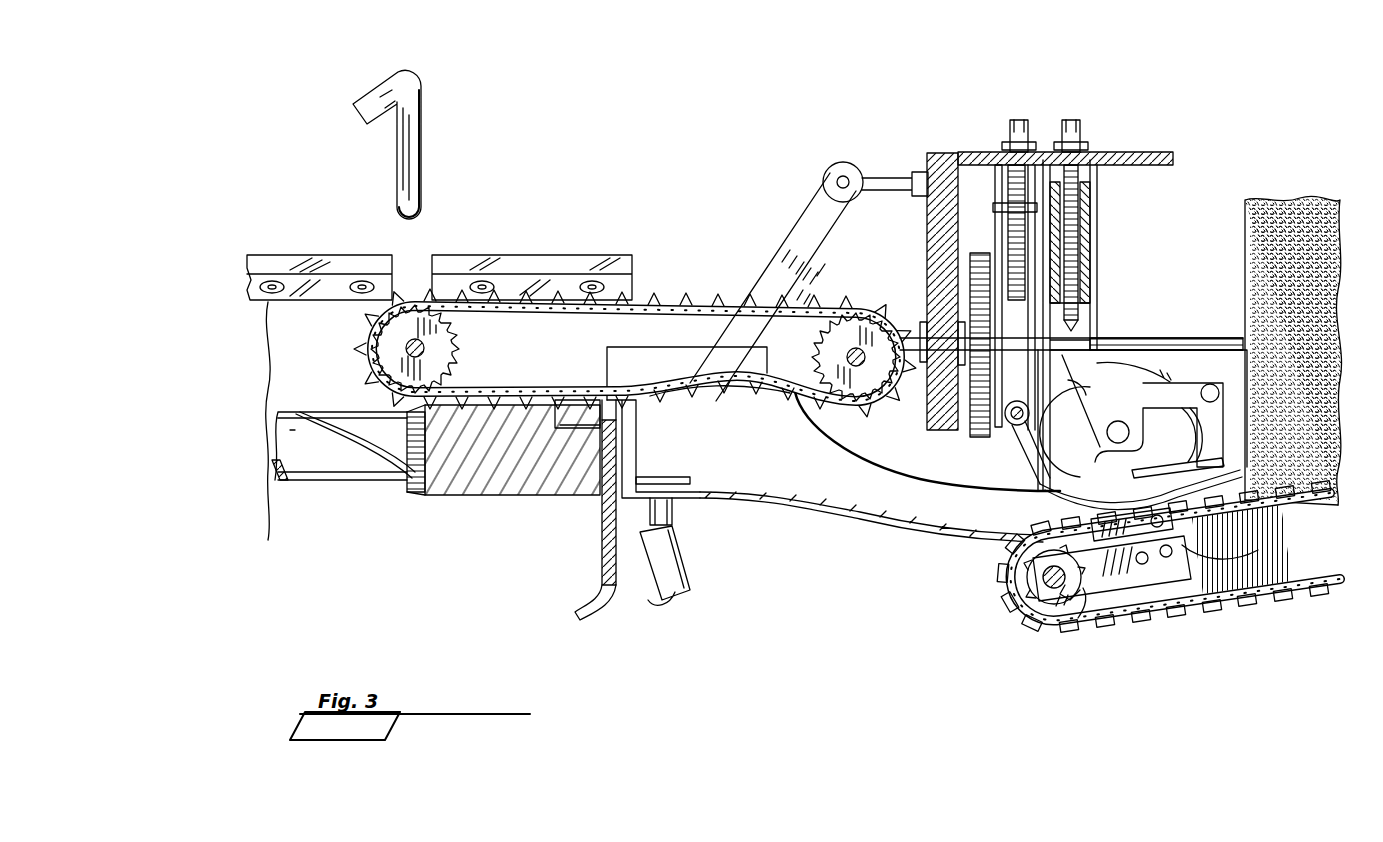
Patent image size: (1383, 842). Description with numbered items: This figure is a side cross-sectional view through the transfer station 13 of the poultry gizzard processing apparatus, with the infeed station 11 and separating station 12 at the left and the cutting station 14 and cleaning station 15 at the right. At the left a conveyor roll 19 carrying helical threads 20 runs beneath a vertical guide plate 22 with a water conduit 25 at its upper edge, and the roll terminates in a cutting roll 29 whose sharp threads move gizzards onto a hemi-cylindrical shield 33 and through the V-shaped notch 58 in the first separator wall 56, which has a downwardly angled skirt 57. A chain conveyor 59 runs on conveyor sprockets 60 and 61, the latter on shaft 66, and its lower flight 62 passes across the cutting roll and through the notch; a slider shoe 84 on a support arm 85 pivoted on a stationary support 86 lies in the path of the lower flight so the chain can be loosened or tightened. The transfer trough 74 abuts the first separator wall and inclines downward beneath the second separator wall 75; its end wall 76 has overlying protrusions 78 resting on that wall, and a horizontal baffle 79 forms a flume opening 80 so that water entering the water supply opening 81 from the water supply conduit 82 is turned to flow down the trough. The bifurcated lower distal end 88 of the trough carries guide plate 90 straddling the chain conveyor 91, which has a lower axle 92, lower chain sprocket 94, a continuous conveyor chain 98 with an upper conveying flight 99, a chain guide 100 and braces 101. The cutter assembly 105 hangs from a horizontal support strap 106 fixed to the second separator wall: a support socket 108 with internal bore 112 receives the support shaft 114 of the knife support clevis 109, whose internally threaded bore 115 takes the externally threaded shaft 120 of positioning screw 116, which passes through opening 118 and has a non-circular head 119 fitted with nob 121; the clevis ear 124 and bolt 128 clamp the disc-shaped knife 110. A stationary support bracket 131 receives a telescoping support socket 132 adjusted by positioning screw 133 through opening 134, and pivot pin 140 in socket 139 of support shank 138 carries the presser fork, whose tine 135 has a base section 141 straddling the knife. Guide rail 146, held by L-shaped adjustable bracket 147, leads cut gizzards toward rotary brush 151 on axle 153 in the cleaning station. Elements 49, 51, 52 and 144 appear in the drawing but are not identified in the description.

The infeed station 11 is at (274, 207).
The separating station 12 is at (559, 132).
The transfer station 13 is at (809, 110).
The cutting station 14 is at (981, 92).
The cleaning station 15 is at (1277, 173).
The conveyor roll 19 is at (283, 486).
The helical threads 20 is at (322, 436).
The vertical guide plate 22 is at (277, 340).
The water conduit 25 is at (285, 264).
The cutting roll 29 is at (488, 487).
The hemi-cylindrical shield 33 is at (575, 410).
The hook member 49 is at (410, 132).
The hook shank 51 is at (414, 136).
The hook bent end 52 is at (378, 95).
The first separator wall 56 is at (628, 463).
The skirt 57 is at (600, 570).
The V-shaped notch 58 is at (628, 405).
The chain conveyor 59 is at (640, 300).
The conveyor sprocket 60 is at (385, 345).
The conveyor sprocket 61 is at (830, 352).
The lower flight 62 is at (505, 392).
The shaft 66 is at (875, 402).
The transfer trough 74 is at (827, 512).
The second separator wall 75 is at (937, 151).
The end wall 76 is at (632, 438).
The overlying protrusions 78 is at (605, 366).
The horizontal baffle 79 is at (670, 479).
The flume opening 80 is at (692, 496).
The water supply opening 81 is at (672, 513).
The water supply conduit 82 is at (655, 572).
The slider shoe 84 is at (755, 390).
The support arm 85 is at (787, 258).
The stationary support 86 is at (893, 173).
The lower distal end 88 is at (1172, 560).
The guide plate 90 is at (1056, 512).
The chain conveyor 91 is at (1293, 605).
The lower axle 92 is at (1038, 615).
The lower chain sprocket 94 is at (1030, 578).
The continuous conveyor chain 98 is at (1186, 612).
The upper conveying flight 99 is at (1272, 502).
The chain guide 100 is at (1188, 587).
The braces 101 is at (1085, 590).
The cutter assembly 105 is at (1211, 214).
The horizontal support strap 106 is at (1158, 150).
The support socket 108 is at (1100, 228).
The knife support clevis 109 is at (1123, 387).
The knife 110 is at (1125, 388).
The internal bore 112 is at (1099, 198).
The support shaft 114 is at (1100, 322).
The internally threaded bore 115 is at (1082, 330).
The positioning screw 116 is at (1083, 216).
The opening 118 is at (1092, 152).
The non-circular head 119 is at (1052, 150).
The externally threaded shaft 120 is at (1082, 240).
The nob 121 is at (1083, 130).
The ear 124 is at (1102, 378).
The bolt 128 is at (1112, 440).
The stationary support bracket 131 is at (1000, 185).
The telescoping support socket 132 is at (1103, 406).
The positioning screw 133 is at (1000, 182).
The opening 134 is at (1040, 158).
The tine 135 is at (1128, 467).
The support shank 138 is at (1028, 442).
The socket 139 is at (1043, 400).
The pivot pin 140 is at (1013, 426).
The base section 141 is at (1062, 490).
The bracket leg 144 is at (1178, 475).
The guide rail 146 is at (1236, 488).
The L-shaped adjustable bracket 147 is at (1217, 428).
The rotary brush 151 is at (1336, 200).
The axle 153 is at (1212, 340).